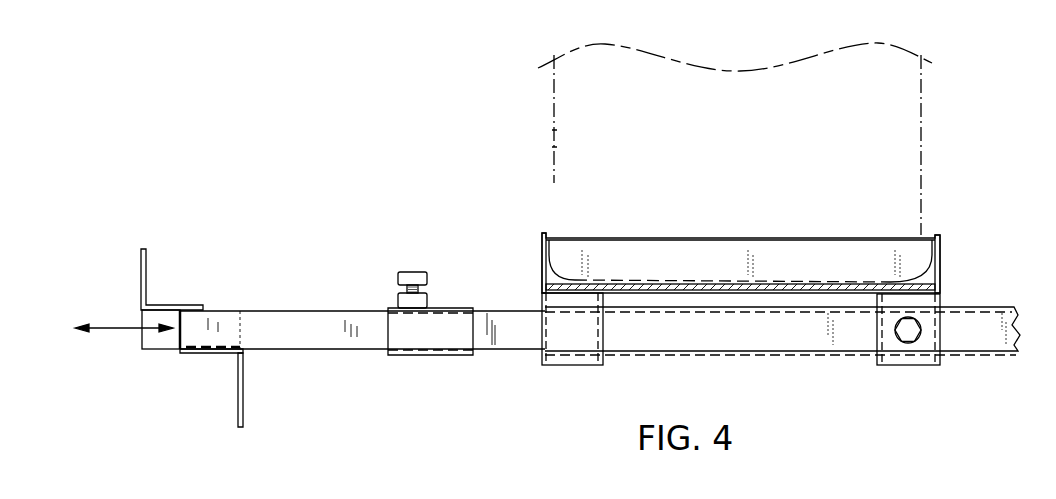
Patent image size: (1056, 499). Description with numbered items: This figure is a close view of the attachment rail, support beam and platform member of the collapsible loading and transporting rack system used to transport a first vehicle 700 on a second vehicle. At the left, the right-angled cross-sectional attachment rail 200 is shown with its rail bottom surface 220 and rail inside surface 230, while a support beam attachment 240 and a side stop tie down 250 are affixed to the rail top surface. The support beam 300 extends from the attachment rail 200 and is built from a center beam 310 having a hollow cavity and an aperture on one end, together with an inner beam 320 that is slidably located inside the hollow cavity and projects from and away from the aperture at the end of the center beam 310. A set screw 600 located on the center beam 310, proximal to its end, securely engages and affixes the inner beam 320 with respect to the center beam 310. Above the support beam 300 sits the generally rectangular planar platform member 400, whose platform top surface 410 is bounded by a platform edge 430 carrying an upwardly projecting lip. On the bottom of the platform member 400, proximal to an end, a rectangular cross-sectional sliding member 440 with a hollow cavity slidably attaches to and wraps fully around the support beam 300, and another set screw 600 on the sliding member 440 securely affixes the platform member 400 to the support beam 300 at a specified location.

The attachment rail 200 is at (217, 280).
The rail bottom surface 220 is at (198, 355).
The rail inside surface 230 is at (235, 377).
The support beam attachment 240 is at (157, 338).
The side stop tie down 250 is at (142, 265).
The support beam 300 is at (824, 390).
The center beam 310 is at (705, 333).
The inner beam 320 is at (337, 310).
The platform member 400 is at (762, 214).
The platform top surface 410 is at (790, 283).
The platform edge 430 is at (542, 235).
The sliding member 440 is at (575, 330).
The set screw 600 is at (410, 270).
The first vehicle 700 is at (922, 85).